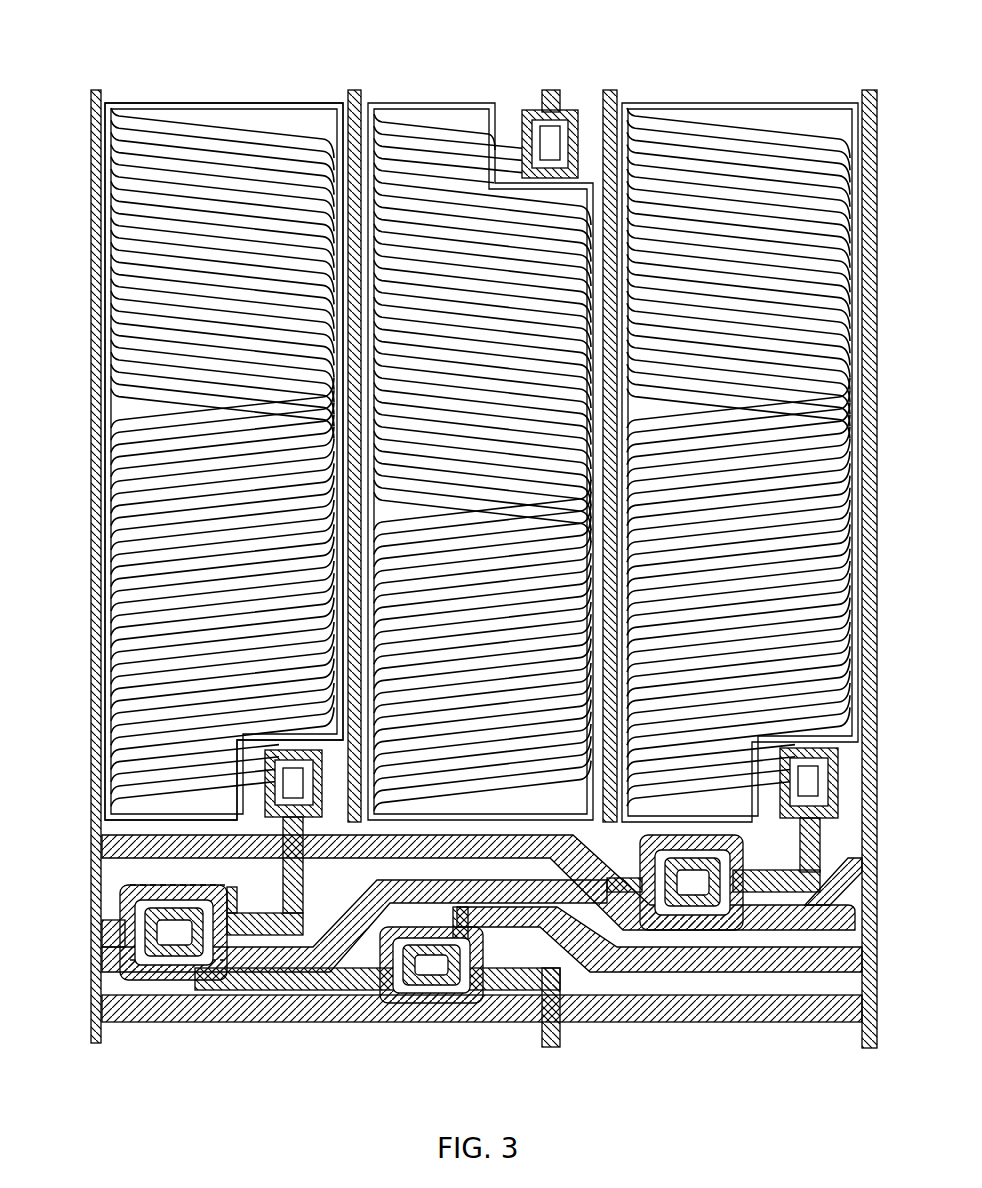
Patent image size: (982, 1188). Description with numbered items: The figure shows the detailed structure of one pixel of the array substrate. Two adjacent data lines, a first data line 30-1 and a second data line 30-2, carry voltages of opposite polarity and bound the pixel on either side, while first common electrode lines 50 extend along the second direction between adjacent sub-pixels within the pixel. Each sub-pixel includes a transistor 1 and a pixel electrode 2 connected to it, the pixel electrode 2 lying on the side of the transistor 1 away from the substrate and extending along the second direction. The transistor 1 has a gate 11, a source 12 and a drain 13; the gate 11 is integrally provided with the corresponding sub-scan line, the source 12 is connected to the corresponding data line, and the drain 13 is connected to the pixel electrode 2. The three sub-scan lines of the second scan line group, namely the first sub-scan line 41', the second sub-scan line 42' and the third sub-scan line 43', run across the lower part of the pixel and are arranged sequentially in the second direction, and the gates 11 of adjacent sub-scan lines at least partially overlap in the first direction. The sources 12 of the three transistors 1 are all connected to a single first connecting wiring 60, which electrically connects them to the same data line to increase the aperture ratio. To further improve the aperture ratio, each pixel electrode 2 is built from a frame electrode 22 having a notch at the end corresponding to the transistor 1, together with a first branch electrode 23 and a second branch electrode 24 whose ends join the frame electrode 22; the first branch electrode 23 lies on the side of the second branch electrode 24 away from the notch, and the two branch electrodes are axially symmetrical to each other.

The transistor 1 is at (150, 963).
The gate 11 is at (213, 903).
The source 12 is at (177, 905).
The drain 13 is at (262, 930).
The pixel electrode 2 is at (273, 46).
The frame electrode 22 is at (149, 103).
The first branch electrode 23 is at (223, 127).
The second branch electrode 24 is at (57, 723).
The first data line 30-1 is at (867, 90).
The second data line 30-2 is at (96, 90).
The first sub-scan line 41' is at (441, 881).
The second sub-scan line 42' is at (331, 925).
The third sub-scan line 43' is at (441, 1008).
The first common electrode line 50 is at (352, 92).
The first connecting wiring 60 is at (310, 985).